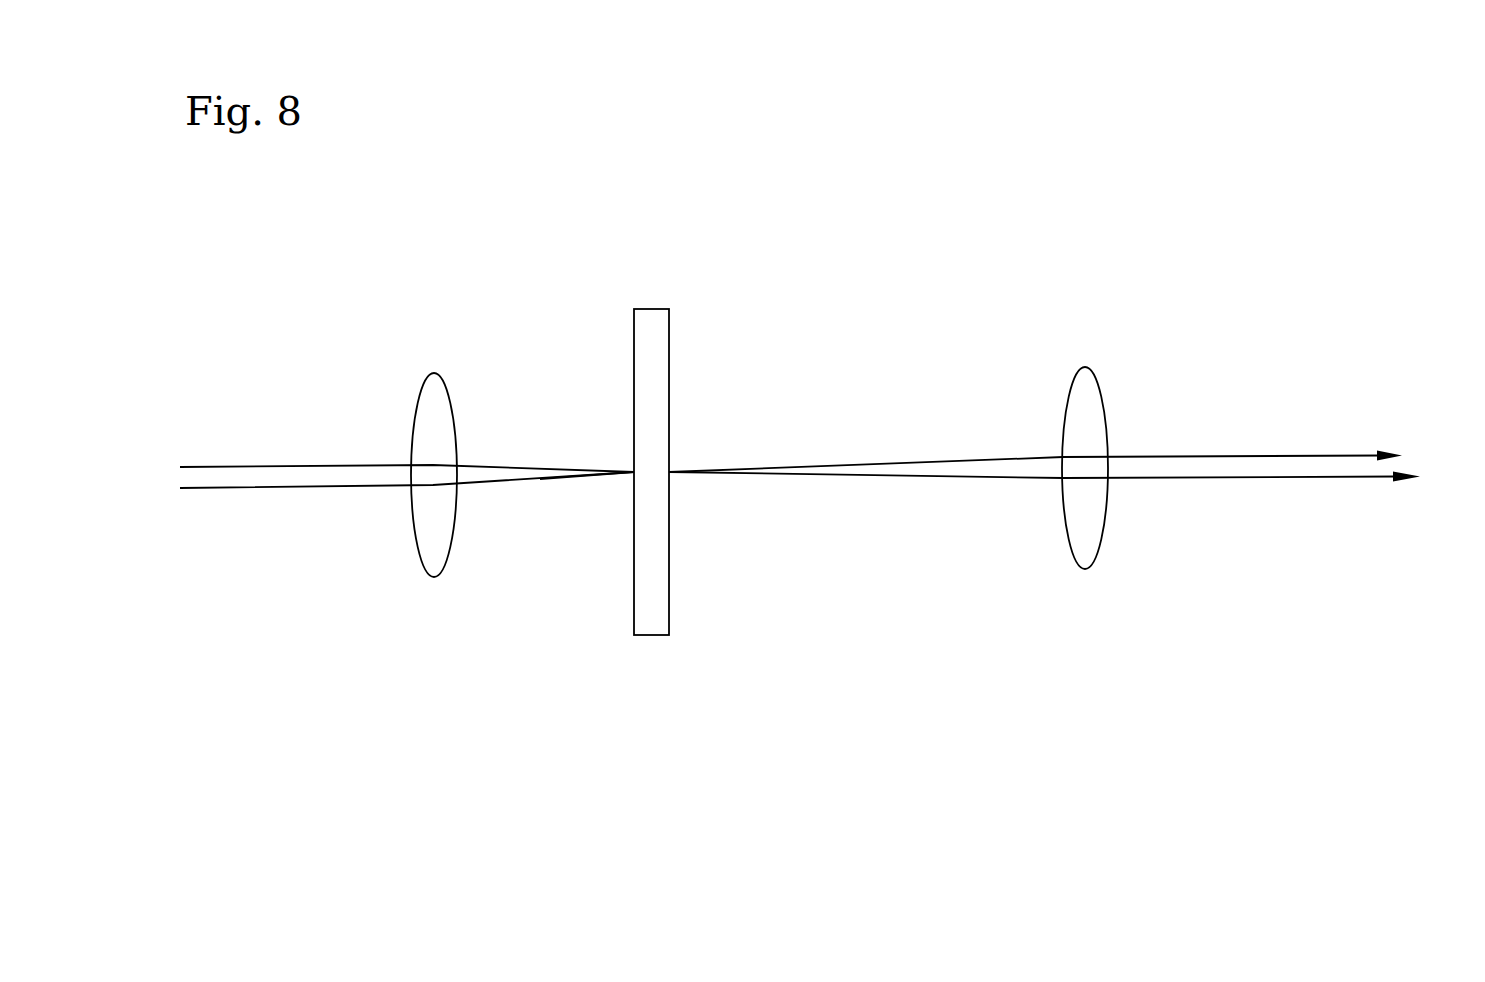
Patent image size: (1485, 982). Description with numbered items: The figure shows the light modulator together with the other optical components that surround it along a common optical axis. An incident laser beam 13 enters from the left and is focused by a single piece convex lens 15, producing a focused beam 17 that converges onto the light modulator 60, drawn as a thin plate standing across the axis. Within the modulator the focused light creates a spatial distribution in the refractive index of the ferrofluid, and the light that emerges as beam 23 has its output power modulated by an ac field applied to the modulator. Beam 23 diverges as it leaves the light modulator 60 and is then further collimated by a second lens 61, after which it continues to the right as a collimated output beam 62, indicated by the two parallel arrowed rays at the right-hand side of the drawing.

The beam 13 is at (407, 515).
The lens 15 is at (401, 518).
The focused beam 17 is at (534, 601).
The light modulator 60 is at (682, 531).
The beam 23 is at (866, 526).
The lens 61 is at (1119, 522).
The beam 62 is at (1269, 518).